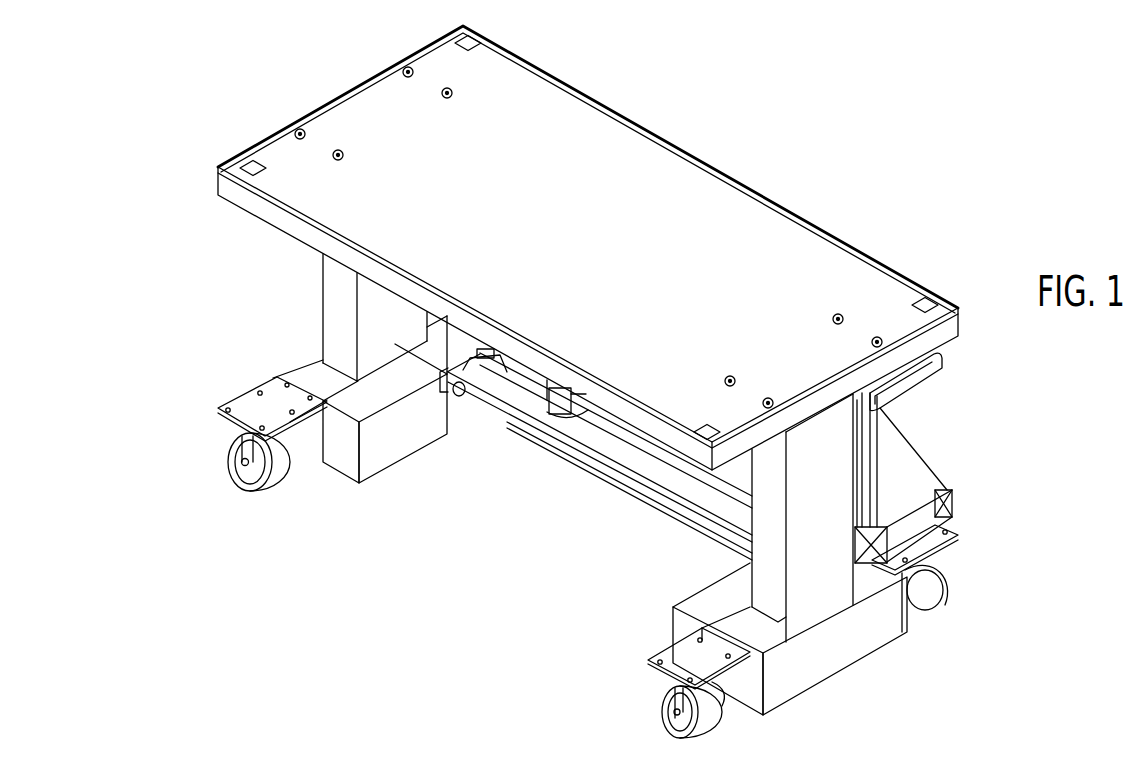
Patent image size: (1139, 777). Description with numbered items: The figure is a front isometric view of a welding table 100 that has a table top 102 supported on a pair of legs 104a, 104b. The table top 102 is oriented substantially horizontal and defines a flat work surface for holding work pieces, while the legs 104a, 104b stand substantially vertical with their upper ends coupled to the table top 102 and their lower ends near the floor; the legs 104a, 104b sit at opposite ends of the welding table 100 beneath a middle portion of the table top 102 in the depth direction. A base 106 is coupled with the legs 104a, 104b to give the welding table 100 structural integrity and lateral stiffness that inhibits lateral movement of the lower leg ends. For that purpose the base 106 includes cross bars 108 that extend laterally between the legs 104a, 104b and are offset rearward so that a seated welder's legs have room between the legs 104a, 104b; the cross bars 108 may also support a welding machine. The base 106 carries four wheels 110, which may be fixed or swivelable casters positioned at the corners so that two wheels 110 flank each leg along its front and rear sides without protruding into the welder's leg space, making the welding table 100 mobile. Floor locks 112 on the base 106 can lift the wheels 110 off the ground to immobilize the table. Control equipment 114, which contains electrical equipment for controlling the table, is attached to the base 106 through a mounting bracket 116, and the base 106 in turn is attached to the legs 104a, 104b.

The welding table 100 is at (776, 100).
The table top 102 is at (606, 107).
The leg 104a is at (340, 318).
The leg 104b is at (830, 597).
The base 106 is at (240, 352).
The cross bars 108 is at (747, 472).
The wheels 110 is at (278, 478).
The floor locks 112 is at (553, 412).
The control equipment 114 is at (872, 474).
The mounting bracket 116 is at (912, 475).